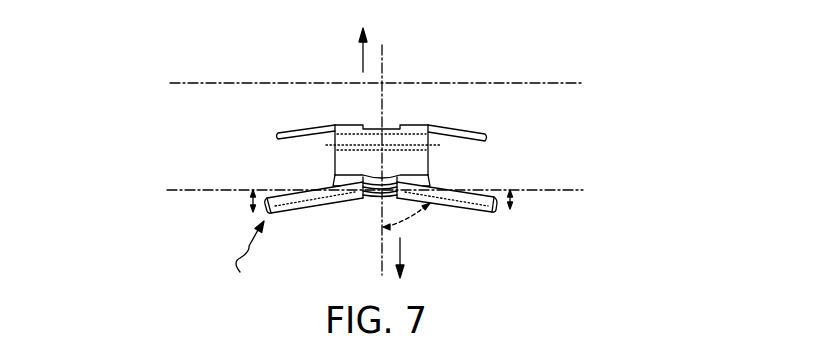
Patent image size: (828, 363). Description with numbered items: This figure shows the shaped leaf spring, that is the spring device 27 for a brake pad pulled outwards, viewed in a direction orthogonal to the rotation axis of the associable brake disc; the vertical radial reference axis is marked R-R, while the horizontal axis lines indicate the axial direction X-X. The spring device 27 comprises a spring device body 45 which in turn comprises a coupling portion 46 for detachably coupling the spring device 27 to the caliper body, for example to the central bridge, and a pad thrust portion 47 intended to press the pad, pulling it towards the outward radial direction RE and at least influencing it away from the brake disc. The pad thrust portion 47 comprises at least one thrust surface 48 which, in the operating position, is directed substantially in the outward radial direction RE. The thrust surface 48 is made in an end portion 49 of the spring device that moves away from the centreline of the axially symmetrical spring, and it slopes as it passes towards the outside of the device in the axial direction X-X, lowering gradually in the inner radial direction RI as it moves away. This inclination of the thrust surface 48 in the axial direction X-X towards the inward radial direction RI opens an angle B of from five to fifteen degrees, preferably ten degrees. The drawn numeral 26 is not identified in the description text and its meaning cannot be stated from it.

The flexible arm 26 is at (292, 215).
The spring device 27 is at (453, 130).
The spring device body 45 is at (343, 125).
The coupling portion 46 is at (333, 139).
The pad thrust portion 47 is at (338, 205).
The thrust surface 48 is at (308, 193).
The end portion 49 is at (246, 259).
The angle B is at (253, 205).
The outward radial direction RE is at (362, 56).
The inward radial direction RI is at (402, 255).
The radial axis R-R is at (383, 68).
The axial direction X-X is at (557, 82).